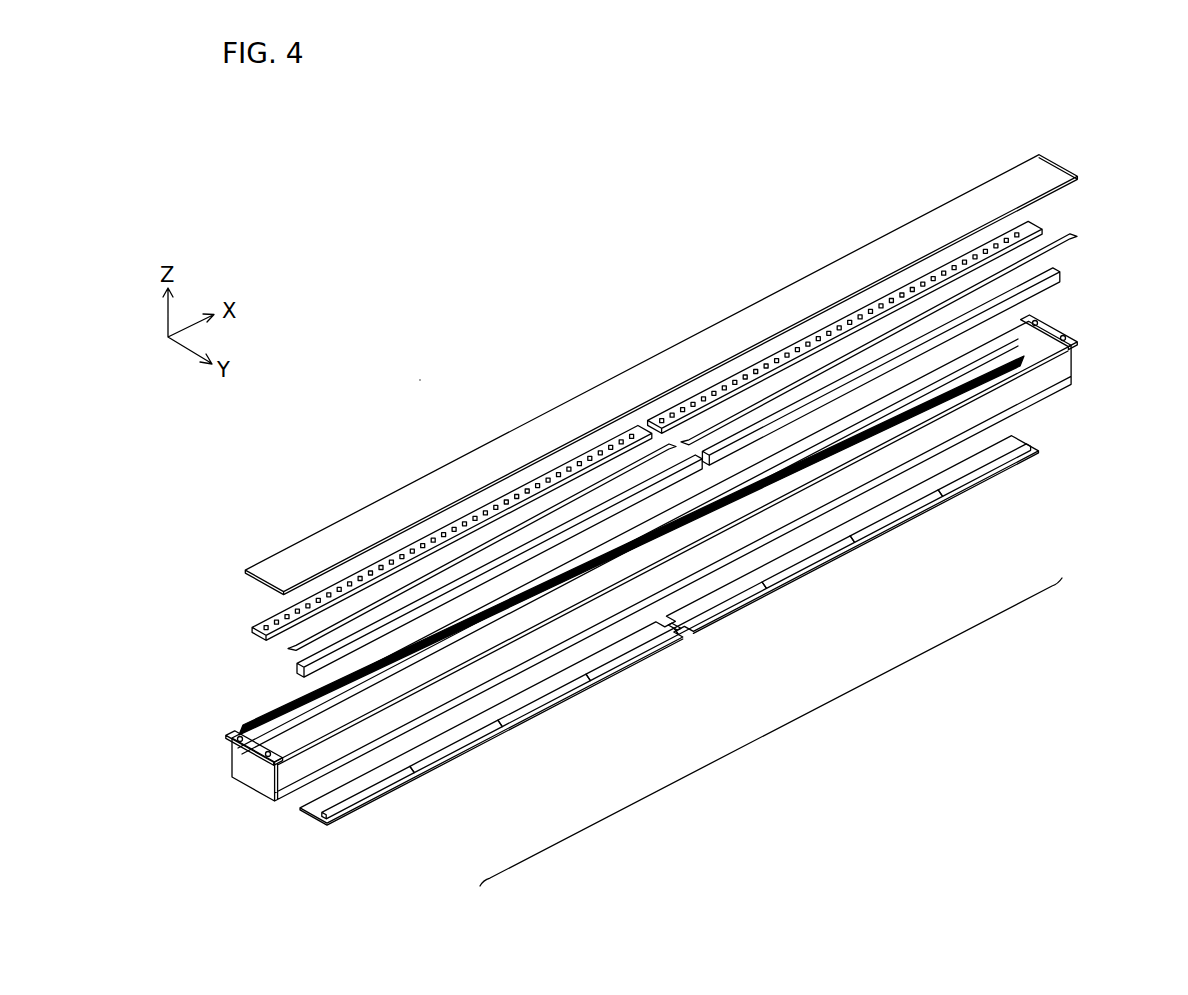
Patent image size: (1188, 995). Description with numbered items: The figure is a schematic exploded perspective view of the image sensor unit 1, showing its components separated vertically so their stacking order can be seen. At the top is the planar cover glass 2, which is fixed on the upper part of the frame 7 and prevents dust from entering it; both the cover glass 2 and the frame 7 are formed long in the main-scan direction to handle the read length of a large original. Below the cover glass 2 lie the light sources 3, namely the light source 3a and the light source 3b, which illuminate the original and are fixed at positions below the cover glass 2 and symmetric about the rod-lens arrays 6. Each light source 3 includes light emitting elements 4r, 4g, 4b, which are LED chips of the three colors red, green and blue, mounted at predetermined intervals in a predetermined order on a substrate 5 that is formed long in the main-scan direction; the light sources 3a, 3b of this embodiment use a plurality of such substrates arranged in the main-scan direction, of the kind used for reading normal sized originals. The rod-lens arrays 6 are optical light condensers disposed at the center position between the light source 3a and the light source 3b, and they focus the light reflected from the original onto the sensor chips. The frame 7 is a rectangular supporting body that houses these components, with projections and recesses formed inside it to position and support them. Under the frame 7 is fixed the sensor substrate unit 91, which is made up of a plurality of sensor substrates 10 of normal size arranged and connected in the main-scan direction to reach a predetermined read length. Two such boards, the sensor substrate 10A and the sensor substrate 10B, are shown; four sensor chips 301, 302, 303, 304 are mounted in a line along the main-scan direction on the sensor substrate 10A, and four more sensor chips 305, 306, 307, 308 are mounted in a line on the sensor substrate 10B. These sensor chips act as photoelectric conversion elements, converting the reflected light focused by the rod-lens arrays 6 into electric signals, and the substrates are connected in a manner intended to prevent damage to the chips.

The image sensor unit 1 is at (433, 317).
The cover glass 2 is at (428, 472).
The light source 3 is at (661, 425).
The light source 3a is at (370, 458).
The light source 3b is at (282, 658).
The light emitting element 4r is at (263, 626).
The light emitting element 4g is at (275, 621).
The light emitting element 4b is at (286, 615).
The substrate 5 is at (360, 571).
The rod-lens array 6 is at (540, 535).
The frame 7 is at (1047, 398).
The sensor substrate 10 is at (669, 651).
The sensor substrate 10A is at (500, 734).
The sensor substrate 10B is at (843, 555).
The sensor chip 301 is at (368, 790).
The sensor chip 302 is at (440, 751).
The sensor chip 303 is at (538, 700).
The sensor chip 304 is at (620, 657).
The sensor chip 305 is at (728, 601).
The sensor chip 306 is at (797, 565).
The sensor chip 307 is at (900, 511).
The sensor chip 308 is at (985, 467).
The sensor substrate unit 91 is at (771, 732).